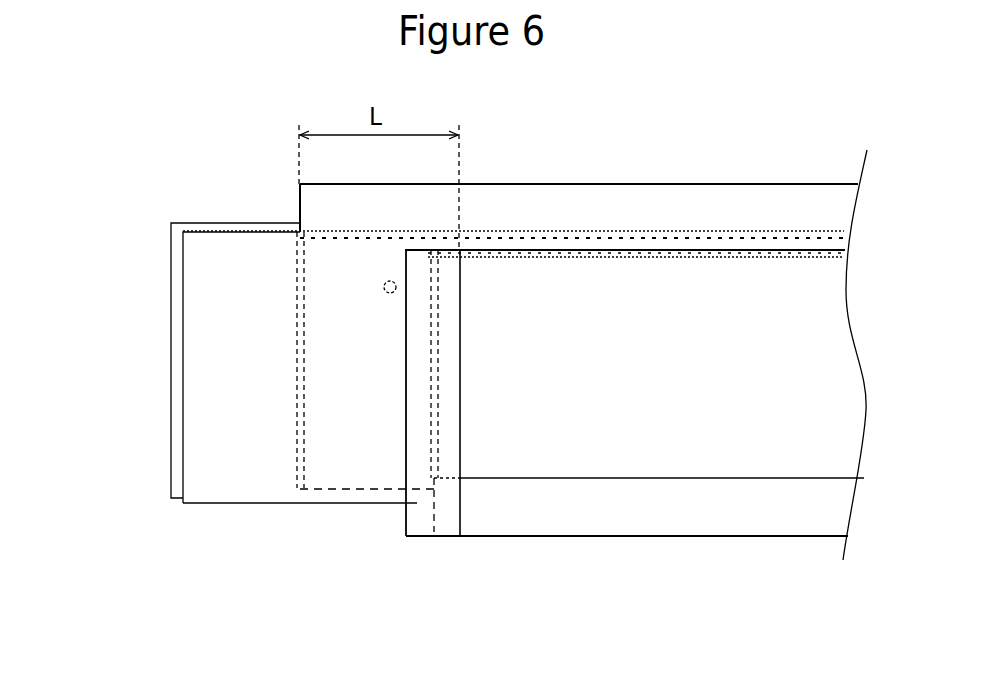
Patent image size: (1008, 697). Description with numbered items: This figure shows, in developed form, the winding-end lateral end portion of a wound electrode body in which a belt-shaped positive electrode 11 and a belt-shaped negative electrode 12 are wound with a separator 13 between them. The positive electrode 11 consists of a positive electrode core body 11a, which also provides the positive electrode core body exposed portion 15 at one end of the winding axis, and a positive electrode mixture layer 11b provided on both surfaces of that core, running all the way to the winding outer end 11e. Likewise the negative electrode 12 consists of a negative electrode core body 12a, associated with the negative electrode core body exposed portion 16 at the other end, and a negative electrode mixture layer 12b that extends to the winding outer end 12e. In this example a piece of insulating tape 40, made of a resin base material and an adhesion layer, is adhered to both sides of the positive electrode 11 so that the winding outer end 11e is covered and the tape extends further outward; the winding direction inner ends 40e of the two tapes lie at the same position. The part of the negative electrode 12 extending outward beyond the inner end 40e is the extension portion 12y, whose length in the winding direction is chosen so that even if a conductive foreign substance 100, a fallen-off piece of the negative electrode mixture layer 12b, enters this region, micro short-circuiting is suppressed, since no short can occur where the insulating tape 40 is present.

The positive electrode 11 is at (615, 456).
The positive electrode core body 11a is at (662, 513).
The positive electrode core body exposed portion 15 is at (627, 567).
The positive electrode mixture layer 11b is at (573, 460).
The winding outer end of the positive electrode 11e is at (430, 413).
The negative electrode 12 is at (520, 155).
The negative electrode core body 12a is at (696, 200).
The negative electrode core body exposed portion 16 is at (579, 152).
The negative electrode mixture layer 12b is at (607, 243).
The winding outer end of the negative electrode 12e is at (298, 203).
The extension portion 12y is at (428, 199).
The separator 13 is at (170, 263).
The insulating tape 40 is at (572, 373).
The winding direction inner end of the insulating tape 40e is at (462, 428).
The conductive foreign substance 100 is at (387, 296).